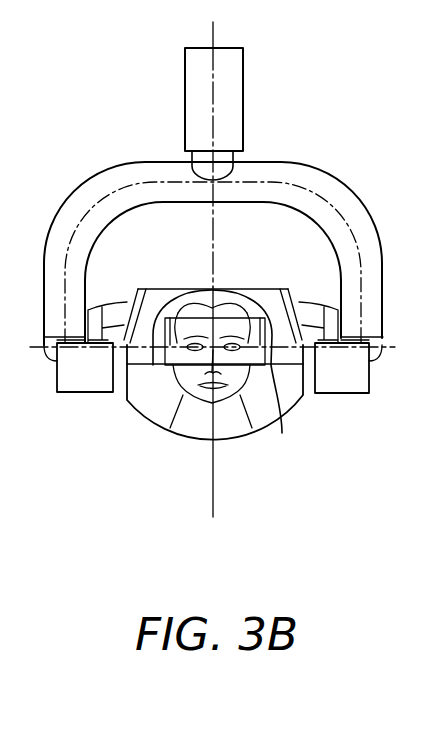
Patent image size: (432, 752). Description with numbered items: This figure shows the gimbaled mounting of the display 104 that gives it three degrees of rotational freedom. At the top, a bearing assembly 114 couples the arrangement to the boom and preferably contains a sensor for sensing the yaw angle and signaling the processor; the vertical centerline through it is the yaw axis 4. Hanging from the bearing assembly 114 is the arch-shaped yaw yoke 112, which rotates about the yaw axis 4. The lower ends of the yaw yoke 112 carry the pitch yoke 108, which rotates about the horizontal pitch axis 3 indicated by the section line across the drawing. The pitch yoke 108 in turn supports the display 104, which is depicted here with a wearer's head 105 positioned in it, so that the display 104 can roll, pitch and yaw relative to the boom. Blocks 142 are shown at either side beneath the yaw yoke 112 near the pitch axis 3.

The pitch axis 3 is at (223, 349).
The yaw axis 4 is at (210, 258).
The display 104 is at (175, 289).
The patient's head 105 is at (268, 355).
The pitch yoke 108 is at (110, 303).
The yaw yoke 112 is at (337, 193).
The bearing assembly 114 is at (243, 95).
The support blocks 142 is at (85, 392).